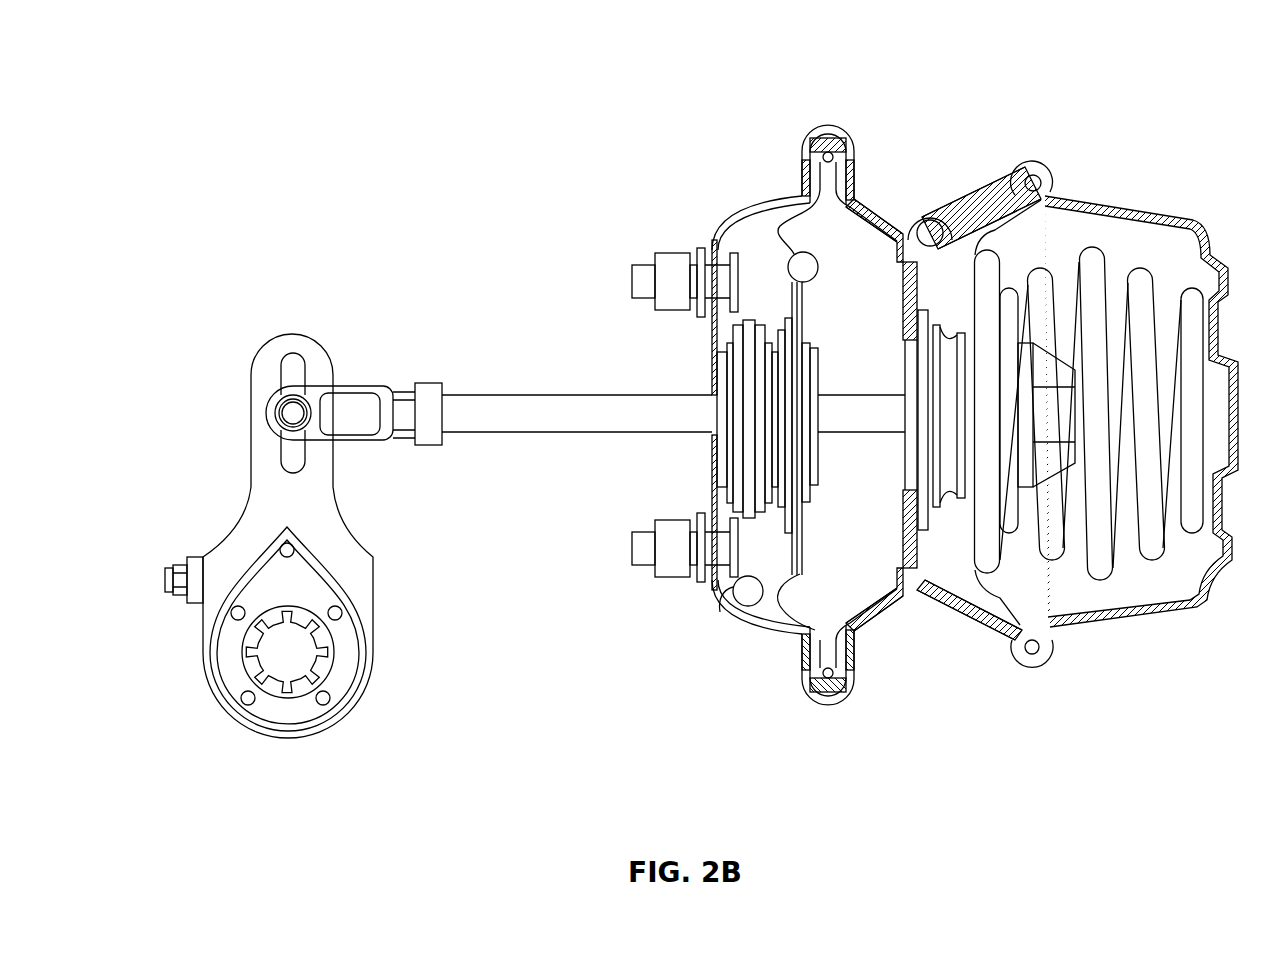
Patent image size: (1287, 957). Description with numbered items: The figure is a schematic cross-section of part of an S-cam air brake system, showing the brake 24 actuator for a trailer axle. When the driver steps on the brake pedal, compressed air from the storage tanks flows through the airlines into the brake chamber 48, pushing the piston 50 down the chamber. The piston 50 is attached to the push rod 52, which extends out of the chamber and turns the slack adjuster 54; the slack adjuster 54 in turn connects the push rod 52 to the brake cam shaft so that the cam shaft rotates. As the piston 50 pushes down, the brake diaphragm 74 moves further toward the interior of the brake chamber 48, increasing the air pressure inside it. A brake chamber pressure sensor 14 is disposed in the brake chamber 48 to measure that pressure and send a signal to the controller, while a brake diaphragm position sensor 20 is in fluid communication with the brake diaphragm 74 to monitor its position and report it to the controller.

The brake chamber pressure sensor 14 is at (748, 597).
The brake diaphragm position sensor 20 is at (800, 258).
The brake 24 is at (1092, 68).
The brake chamber 48 is at (753, 562).
The piston 50 is at (873, 420).
The push rod 52 is at (535, 418).
The slack adjuster 54 is at (262, 490).
The brake diaphragm 74 is at (783, 627).